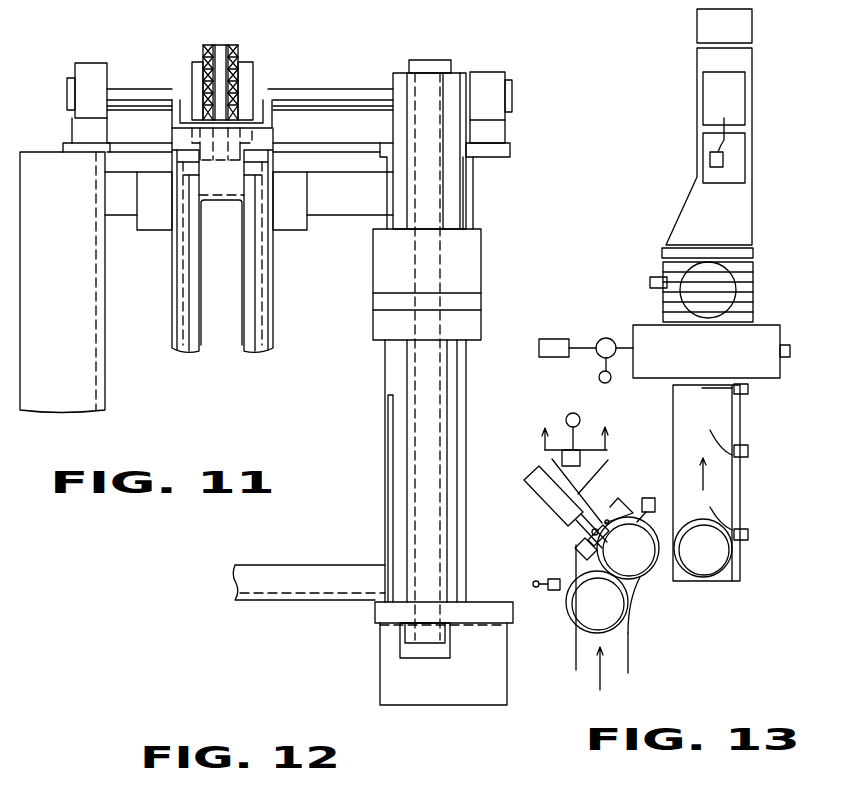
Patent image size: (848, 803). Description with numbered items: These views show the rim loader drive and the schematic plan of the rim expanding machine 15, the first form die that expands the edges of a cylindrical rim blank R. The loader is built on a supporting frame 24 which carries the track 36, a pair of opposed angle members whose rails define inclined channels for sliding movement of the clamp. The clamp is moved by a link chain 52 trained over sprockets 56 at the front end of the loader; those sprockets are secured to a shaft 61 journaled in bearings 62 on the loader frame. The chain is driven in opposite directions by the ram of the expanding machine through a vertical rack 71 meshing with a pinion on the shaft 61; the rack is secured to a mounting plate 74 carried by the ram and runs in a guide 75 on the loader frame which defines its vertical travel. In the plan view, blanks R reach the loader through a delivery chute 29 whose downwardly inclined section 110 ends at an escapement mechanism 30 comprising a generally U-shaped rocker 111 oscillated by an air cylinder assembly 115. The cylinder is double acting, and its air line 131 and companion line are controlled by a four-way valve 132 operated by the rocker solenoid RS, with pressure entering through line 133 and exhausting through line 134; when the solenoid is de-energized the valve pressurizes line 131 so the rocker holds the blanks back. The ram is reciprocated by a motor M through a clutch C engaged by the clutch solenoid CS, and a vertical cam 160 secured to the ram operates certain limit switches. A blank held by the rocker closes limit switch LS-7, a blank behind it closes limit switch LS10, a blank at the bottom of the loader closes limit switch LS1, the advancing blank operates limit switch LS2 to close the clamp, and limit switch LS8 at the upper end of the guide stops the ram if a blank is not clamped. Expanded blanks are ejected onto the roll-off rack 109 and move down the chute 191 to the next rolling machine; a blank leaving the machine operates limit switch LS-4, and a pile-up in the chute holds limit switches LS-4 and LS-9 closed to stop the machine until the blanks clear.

In FIG. 11, the bearings 62 is at (78, 72).
In FIG. 12, the bearings 62 is at (490, 76).
In FIG. 11, the shaft 61 is at (332, 97).
In FIG. 11, the link chain 52 is at (225, 40).
In FIG. 11, the sprockets 56 is at (201, 57).
In FIG. 11, the track 36 is at (283, 330).
In FIG. 12, the vertical rack 71 is at (425, 64).
In FIG. 12, the guide 75 is at (474, 192).
In FIG. 12, the mounting plate 74 is at (482, 287).
In FIG. 12, the supporting frame 24 is at (377, 526).
In FIG. 13, the chute 191 is at (752, 172).
In FIG. 13, the limit switch LS-9 is at (710, 158).
In FIG. 13, the rim blank R is at (687, 272).
In FIG. 13, the roll-off rack 109 is at (753, 295).
In FIG. 13, the limit switch LS-4 is at (650, 283).
In FIG. 13, the rim expanding machine 15 is at (762, 391).
In FIG. 13, the vertical cam 160 is at (785, 345).
In FIG. 13, the motor M is at (553, 344).
In FIG. 13, the clutch C is at (606, 338).
In FIG. 13, the clutch solenoid CS is at (609, 382).
In FIG. 13, the rocker solenoid RS is at (570, 421).
In FIG. 13, the limit switch LS8 is at (740, 389).
In FIG. 13, the limit switch LS2 is at (748, 452).
In FIG. 13, the limit switch LS1 is at (748, 535).
In FIG. 13, the downwardly inclined section 110 is at (630, 653).
In FIG. 13, the delivery chute 29 is at (645, 604).
In FIG. 13, the limit switch LS10 is at (528, 585).
In FIG. 13, the air line 131 is at (552, 459).
In FIG. 13, the 4-way valve 132 is at (577, 448).
In FIG. 13, the air line 133 is at (545, 450).
In FIG. 13, the air line 134 is at (607, 441).
In FIG. 13, the escapement mechanism 30 is at (613, 483).
In FIG. 13, the limit switch LS-7 is at (642, 501).
In FIG. 13, the air cylinder assembly 115 is at (550, 510).
In FIG. 13, the rocker 111 is at (580, 558).